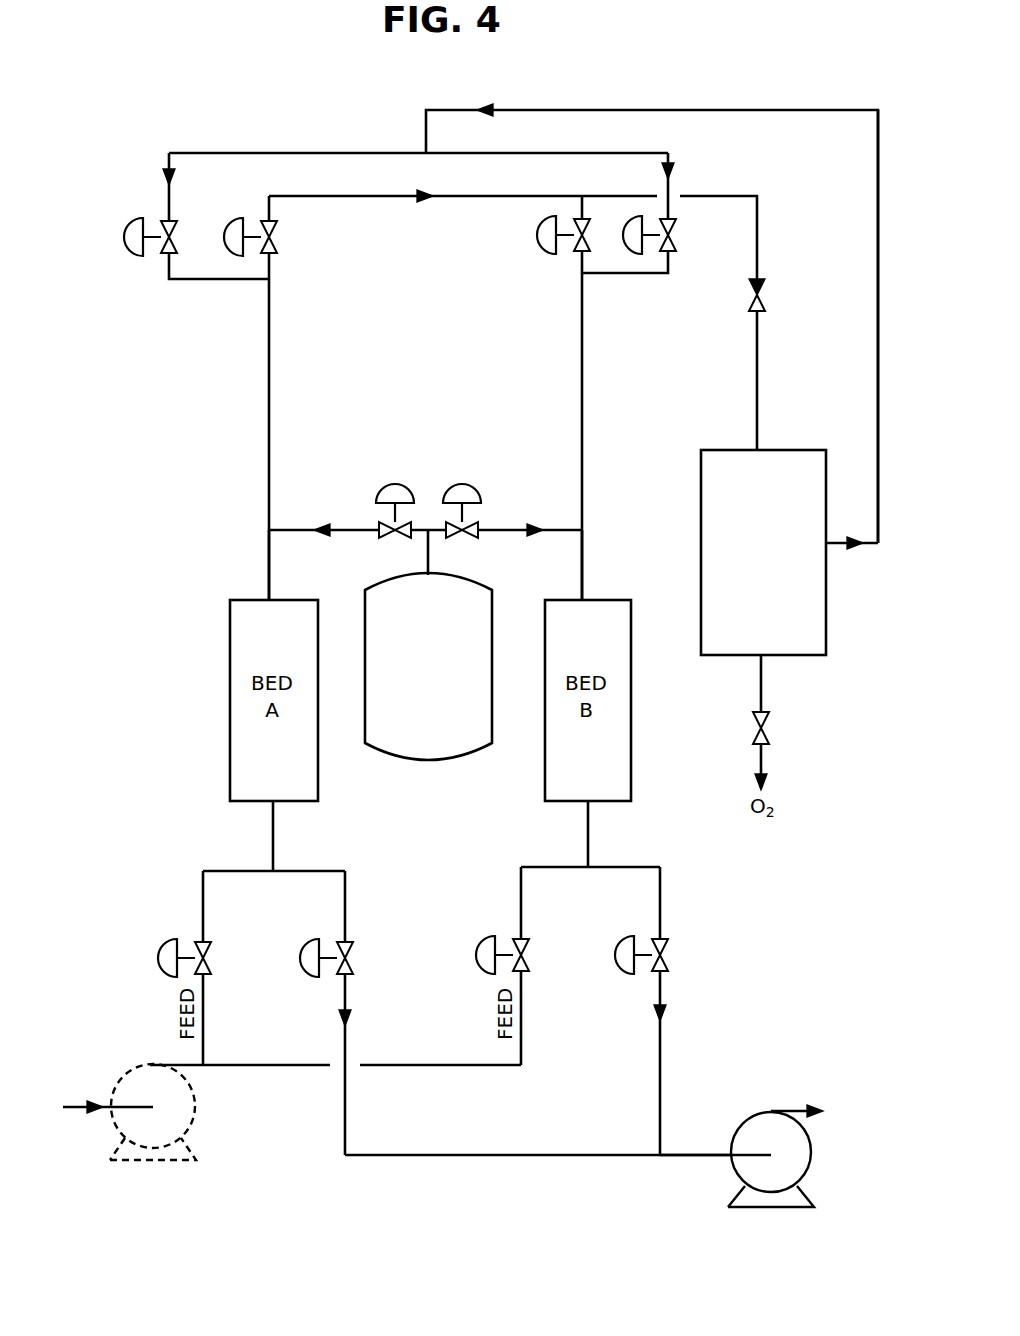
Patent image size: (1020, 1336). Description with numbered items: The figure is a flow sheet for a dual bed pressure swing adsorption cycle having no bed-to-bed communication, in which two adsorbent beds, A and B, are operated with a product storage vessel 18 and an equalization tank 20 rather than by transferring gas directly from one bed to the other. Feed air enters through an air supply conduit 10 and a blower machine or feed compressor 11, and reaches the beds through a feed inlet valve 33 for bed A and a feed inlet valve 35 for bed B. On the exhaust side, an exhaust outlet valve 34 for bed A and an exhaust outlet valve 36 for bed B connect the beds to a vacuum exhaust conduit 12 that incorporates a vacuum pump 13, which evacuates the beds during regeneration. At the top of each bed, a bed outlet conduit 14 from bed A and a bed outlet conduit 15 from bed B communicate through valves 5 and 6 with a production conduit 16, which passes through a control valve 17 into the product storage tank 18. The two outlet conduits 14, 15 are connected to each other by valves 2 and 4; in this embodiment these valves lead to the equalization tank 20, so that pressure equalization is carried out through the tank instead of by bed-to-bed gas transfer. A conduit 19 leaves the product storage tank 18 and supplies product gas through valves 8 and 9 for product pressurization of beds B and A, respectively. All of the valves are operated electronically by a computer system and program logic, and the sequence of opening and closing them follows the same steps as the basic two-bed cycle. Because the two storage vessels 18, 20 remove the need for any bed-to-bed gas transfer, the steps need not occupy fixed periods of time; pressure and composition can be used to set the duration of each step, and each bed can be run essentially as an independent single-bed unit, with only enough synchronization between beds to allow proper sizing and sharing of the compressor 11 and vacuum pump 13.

The valve 2 is at (470, 523).
The valve 4 is at (386, 523).
The valve 5 is at (257, 237).
The valve 6 is at (570, 235).
The valve 8 is at (656, 235).
The valve 9 is at (157, 237).
The air supply conduit 10 is at (101, 1105).
The feed compressor 11 is at (153, 1112).
The vacuum exhaust conduit 12 is at (695, 1136).
The vacuum pump 13 is at (775, 1156).
The bed outlet conduit 14 is at (286, 565).
The bed outlet conduit 15 is at (599, 565).
The production conduit 16 is at (513, 234).
The control valve 17 is at (759, 364).
The product storage tank 18 is at (763, 552).
The conduit 19 is at (862, 326).
The equalization tank 20 is at (428, 666).
The feed inlet valve 33 is at (197, 958).
The exhaust outlet valve 34 is at (339, 958).
The feed inlet valve 35 is at (515, 955).
The exhaust outlet valve 36 is at (654, 955).